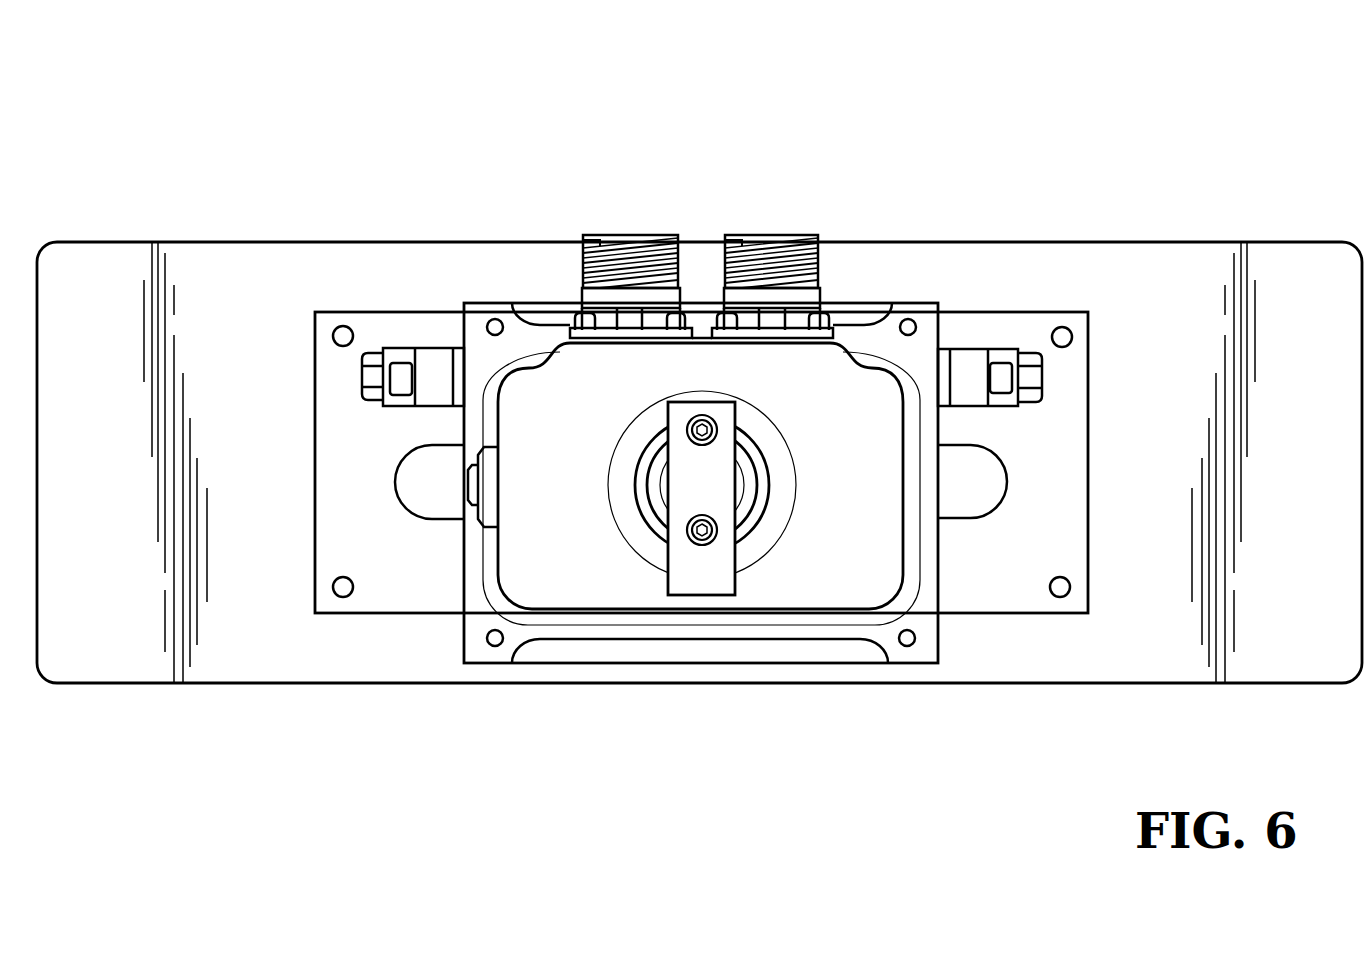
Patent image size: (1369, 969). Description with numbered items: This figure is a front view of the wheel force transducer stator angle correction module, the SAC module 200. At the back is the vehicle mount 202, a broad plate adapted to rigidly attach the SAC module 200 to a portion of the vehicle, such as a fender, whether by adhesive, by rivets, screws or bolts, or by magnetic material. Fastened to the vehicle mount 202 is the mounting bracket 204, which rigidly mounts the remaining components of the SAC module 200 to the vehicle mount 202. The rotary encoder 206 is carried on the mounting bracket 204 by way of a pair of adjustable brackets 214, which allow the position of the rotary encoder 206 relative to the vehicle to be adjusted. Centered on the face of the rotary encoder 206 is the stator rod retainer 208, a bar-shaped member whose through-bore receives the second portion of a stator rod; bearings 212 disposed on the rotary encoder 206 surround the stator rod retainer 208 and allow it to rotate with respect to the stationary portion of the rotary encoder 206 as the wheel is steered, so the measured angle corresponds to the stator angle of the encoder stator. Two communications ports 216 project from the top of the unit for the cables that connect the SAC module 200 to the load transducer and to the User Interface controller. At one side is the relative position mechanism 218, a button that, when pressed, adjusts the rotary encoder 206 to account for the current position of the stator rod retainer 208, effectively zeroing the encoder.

The SAC module 200 is at (1247, 170).
The vehicle mount 202 is at (205, 255).
The mounting bracket 204 is at (325, 365).
The rotary encoder 206 is at (927, 632).
The stator rod retainer 208 is at (690, 582).
The bearings 212 is at (760, 487).
The adjustable brackets 214 is at (428, 360).
The communications ports 216 is at (630, 235).
The relative position mechanism 218 is at (485, 480).